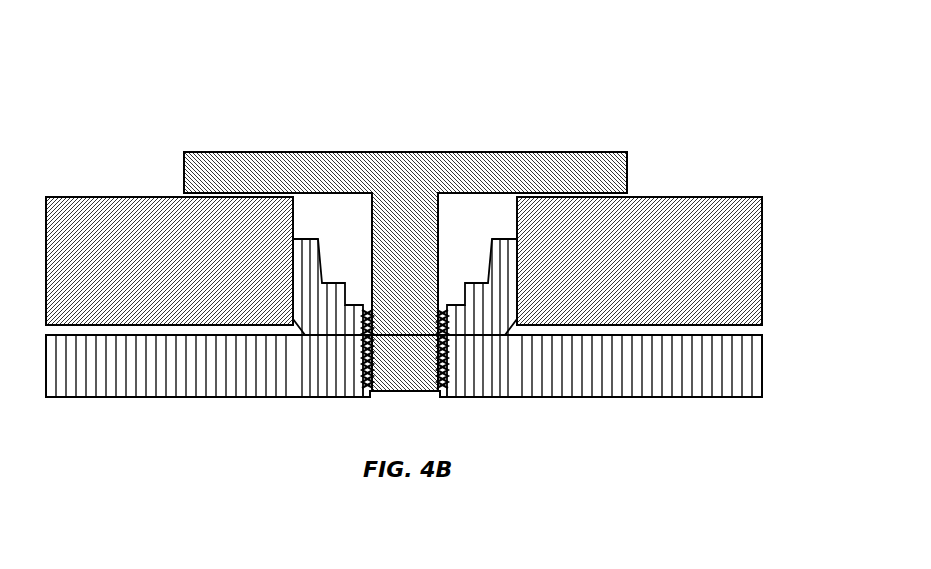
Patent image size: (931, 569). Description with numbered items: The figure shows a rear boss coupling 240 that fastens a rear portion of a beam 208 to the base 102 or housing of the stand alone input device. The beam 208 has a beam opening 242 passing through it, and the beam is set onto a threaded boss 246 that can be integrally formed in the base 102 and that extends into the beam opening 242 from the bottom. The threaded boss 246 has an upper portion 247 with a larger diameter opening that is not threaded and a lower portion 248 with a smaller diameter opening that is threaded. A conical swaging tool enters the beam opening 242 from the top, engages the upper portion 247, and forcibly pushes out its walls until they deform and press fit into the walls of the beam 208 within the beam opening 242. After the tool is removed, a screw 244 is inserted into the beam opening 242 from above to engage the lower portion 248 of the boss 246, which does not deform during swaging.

The rear boss coupling 240 is at (480, 84).
The screw 244 is at (618, 168).
The beam opening 242 is at (325, 229).
The beam 208 is at (747, 251).
The base 102 is at (698, 397).
The threaded boss 246 is at (328, 297).
The upper portion 247 is at (465, 278).
The lower portion 248 is at (442, 300).